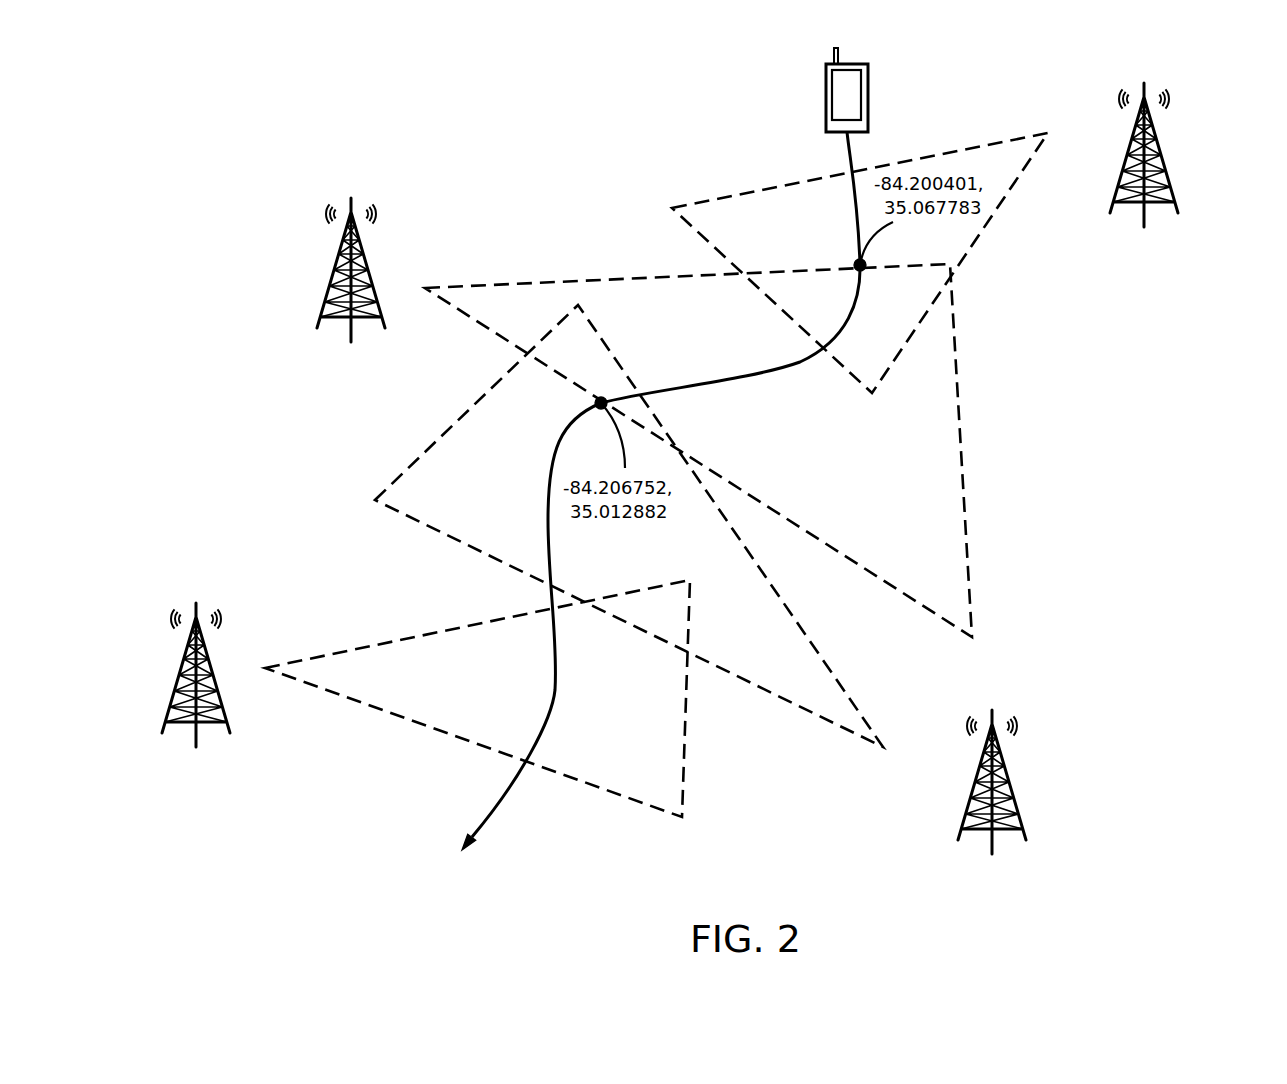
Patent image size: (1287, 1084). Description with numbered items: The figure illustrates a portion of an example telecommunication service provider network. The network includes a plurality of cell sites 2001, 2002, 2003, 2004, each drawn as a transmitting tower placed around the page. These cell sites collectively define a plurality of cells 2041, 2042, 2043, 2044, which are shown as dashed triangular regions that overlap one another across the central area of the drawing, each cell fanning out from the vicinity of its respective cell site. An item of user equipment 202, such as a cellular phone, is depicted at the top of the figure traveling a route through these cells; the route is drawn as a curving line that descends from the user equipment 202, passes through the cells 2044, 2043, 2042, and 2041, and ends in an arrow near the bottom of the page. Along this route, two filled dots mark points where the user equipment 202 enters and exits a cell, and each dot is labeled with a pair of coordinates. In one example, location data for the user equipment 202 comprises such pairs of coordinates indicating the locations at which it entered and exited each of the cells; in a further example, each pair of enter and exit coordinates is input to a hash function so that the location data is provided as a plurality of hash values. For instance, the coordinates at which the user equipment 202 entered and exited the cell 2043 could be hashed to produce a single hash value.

The user equipment 202 is at (868, 100).
The cell site 2001 is at (203, 641).
The cell site 2002 is at (1000, 752).
The cell site 2003 is at (358, 250).
The cell site 2004 is at (1152, 141).
The cell 2041 is at (477, 698).
The cell 2042 is at (629, 526).
The cell 2043 is at (698, 450).
The cell 2044 is at (860, 263).